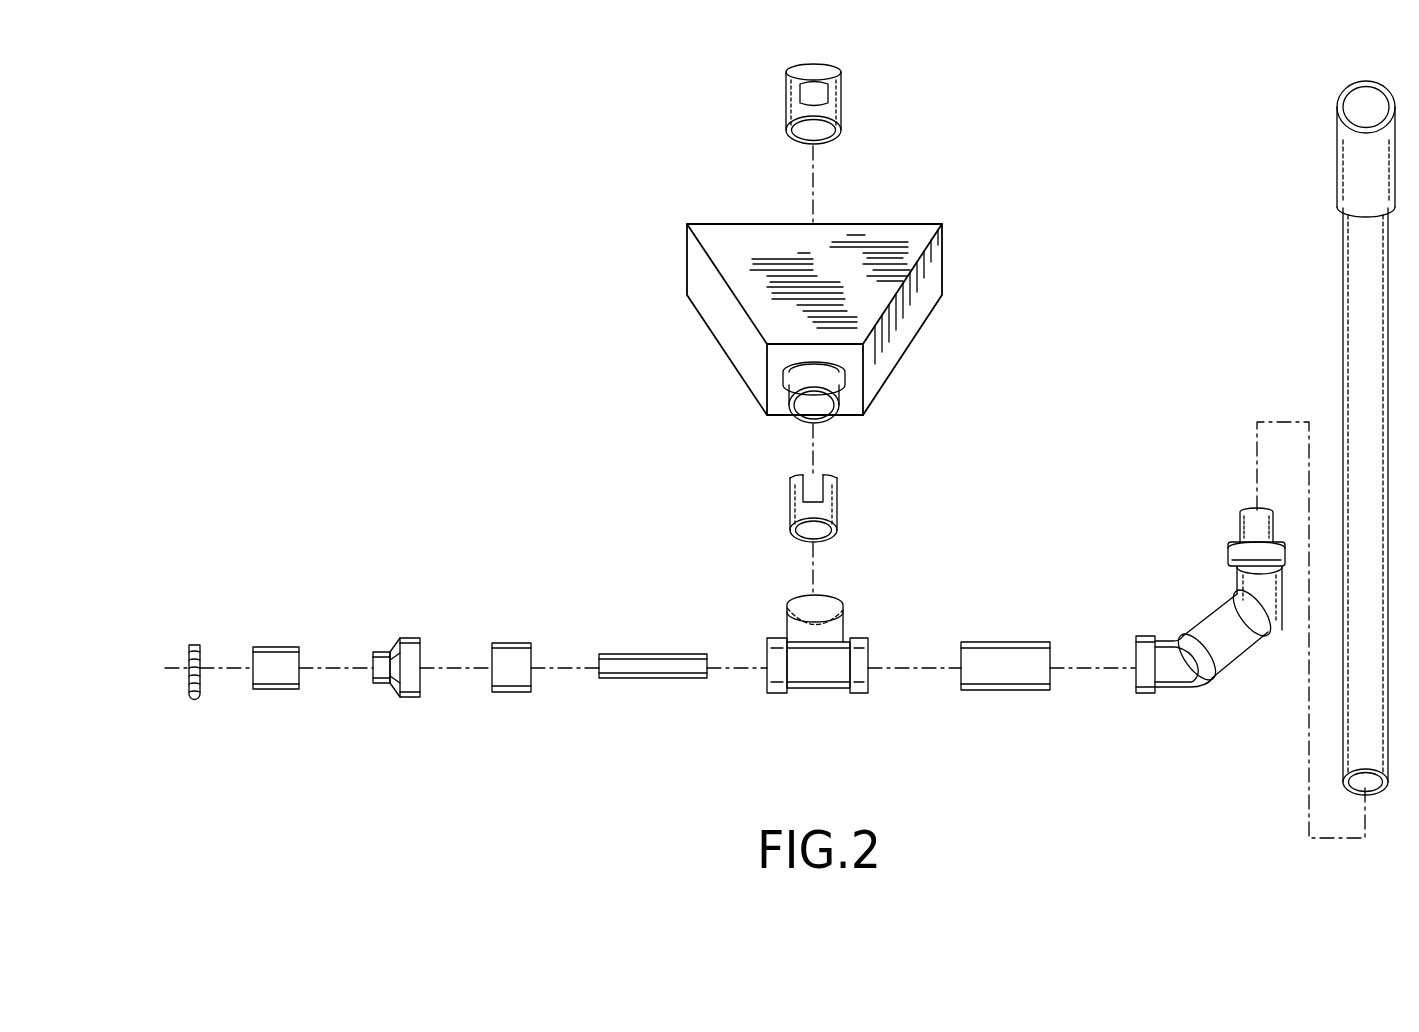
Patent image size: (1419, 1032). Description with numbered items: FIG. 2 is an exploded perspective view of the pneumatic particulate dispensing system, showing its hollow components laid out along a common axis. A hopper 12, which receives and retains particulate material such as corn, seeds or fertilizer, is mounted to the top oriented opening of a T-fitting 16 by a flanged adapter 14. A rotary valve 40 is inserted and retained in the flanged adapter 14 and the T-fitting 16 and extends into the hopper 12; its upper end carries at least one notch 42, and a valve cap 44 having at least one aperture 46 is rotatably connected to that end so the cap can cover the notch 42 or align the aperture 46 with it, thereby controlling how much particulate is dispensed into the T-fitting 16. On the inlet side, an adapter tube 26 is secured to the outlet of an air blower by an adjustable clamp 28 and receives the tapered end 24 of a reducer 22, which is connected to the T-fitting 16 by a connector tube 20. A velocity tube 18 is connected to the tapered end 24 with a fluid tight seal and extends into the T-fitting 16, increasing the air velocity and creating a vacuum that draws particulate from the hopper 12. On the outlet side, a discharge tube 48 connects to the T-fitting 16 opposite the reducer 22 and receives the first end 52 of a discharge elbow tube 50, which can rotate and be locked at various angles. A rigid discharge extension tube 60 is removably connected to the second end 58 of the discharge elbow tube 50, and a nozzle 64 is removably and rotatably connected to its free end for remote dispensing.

The hopper 12 is at (730, 360).
The flanged adapter 14 is at (828, 422).
The T-fitting 16 is at (820, 693).
The velocity tube 18 is at (647, 654).
The connector tube 20 is at (513, 643).
The reducer 22 is at (410, 638).
The tapered end 24 is at (375, 652).
The adapter tube 26 is at (276, 647).
The adjustable clamp 28 is at (192, 643).
The rotary valve 40 is at (788, 508).
The notch 42 is at (822, 487).
The valve cap 44 is at (842, 105).
The aperture 46 is at (800, 93).
The discharge tube 48 is at (1005, 642).
The discharge elbow tube 50 is at (1213, 600).
The first end 52 is at (1143, 694).
The second end 58 is at (1242, 510).
The rigid discharge extension tube 60 is at (1342, 340).
The nozzle 64 is at (1337, 160).